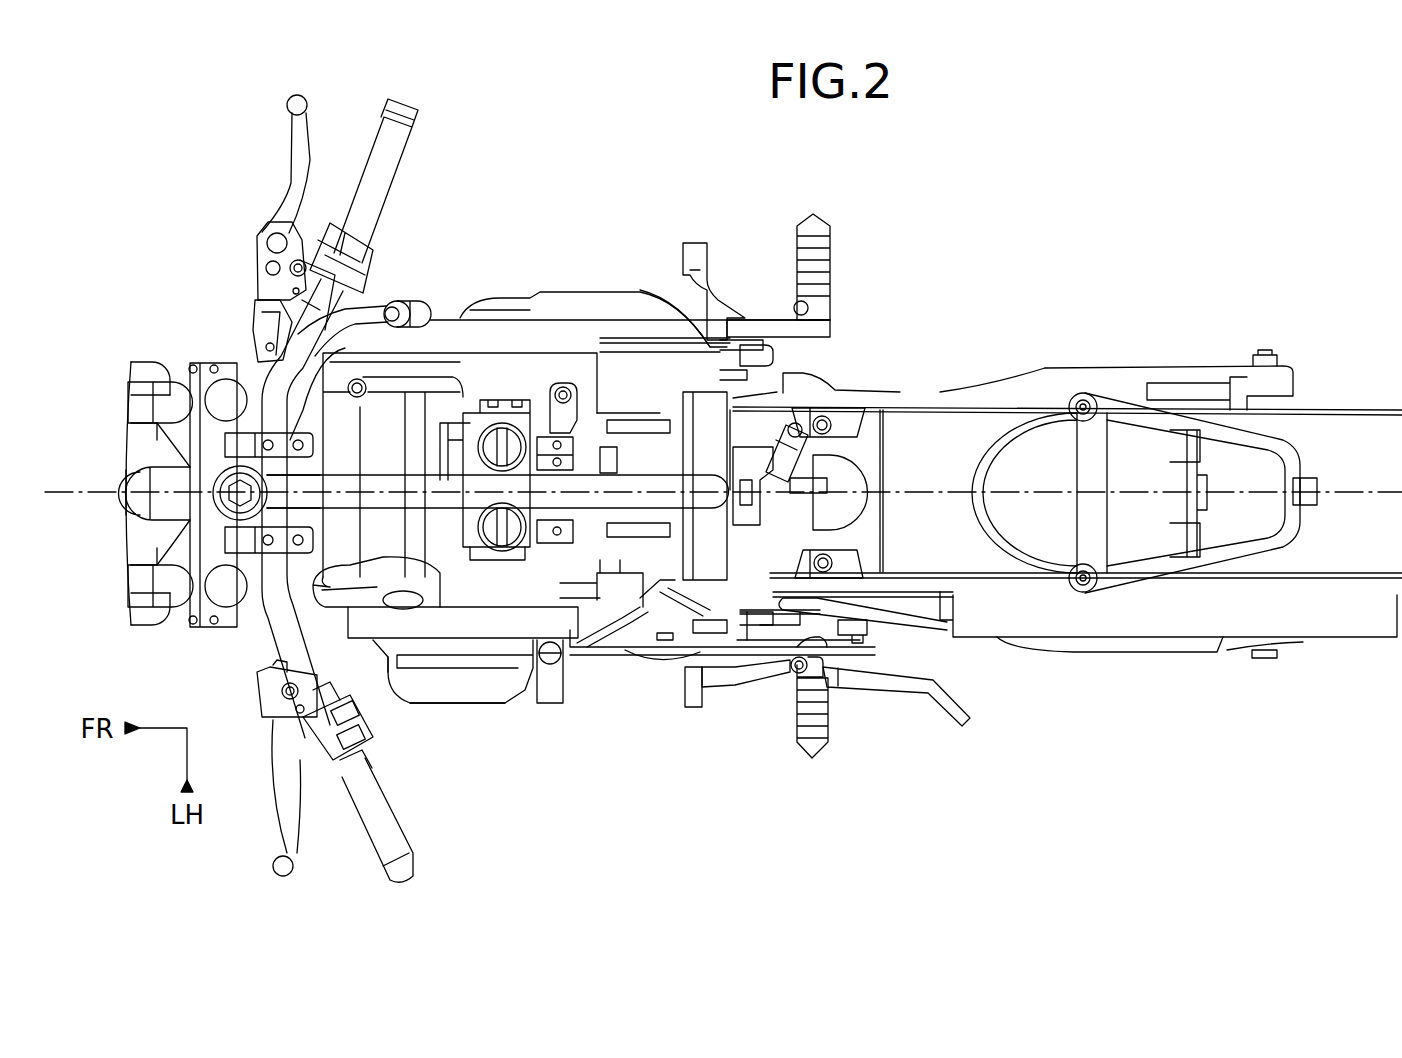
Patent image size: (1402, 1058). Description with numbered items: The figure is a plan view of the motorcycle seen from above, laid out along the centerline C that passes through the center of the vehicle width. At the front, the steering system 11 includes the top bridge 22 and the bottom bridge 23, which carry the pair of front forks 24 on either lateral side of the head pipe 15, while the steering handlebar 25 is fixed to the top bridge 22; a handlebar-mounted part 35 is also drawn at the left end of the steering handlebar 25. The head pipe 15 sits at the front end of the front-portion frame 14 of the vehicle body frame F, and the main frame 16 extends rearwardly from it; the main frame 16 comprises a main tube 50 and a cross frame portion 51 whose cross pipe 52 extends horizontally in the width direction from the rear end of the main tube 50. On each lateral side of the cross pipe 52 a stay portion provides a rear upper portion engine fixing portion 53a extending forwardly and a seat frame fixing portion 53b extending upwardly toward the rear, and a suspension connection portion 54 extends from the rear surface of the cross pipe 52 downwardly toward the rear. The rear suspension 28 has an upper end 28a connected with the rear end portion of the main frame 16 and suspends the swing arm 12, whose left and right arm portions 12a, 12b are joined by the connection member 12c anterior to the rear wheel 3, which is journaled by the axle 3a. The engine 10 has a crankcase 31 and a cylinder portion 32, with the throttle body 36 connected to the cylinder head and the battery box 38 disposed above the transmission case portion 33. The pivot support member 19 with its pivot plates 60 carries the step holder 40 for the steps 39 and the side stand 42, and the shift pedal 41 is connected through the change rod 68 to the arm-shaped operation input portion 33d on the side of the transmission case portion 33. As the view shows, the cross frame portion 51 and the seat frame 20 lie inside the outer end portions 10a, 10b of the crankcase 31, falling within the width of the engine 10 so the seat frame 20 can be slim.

The rear wheel 3 is at (1357, 408).
The axle 3a is at (1263, 659).
The engine 10 is at (480, 707).
The outer end portion 10a is at (463, 707).
The outer end portion 10b is at (562, 292).
The steering system 11 is at (122, 392).
The swing arm 12 is at (1152, 655).
The arm portion 12a is at (1100, 653).
The arm portion 12b is at (1141, 366).
The connection member 12c is at (995, 452).
The front-portion frame 14 is at (636, 470).
The head pipe 15 is at (168, 484).
The main frame 16 is at (380, 475).
The pivot support member 19 is at (667, 657).
The seat frame 20 is at (922, 400).
The top bridge 22 is at (190, 441).
The bottom bridge 23 is at (132, 452).
The front forks 24 is at (166, 380).
The steering handlebar 25 is at (270, 365).
The rear suspension 28 is at (832, 455).
The upper end 28a is at (778, 445).
The crankcase 31 is at (512, 707).
The cylinder portion 32 is at (322, 665).
The transmission case portion 33 is at (604, 405).
The operation input portion 33d is at (652, 625).
The brake lever 35 is at (350, 320).
The throttle body 36 is at (467, 400).
The battery box 38 is at (656, 402).
The steps 39 is at (810, 215).
The step holder 40 is at (773, 673).
The shift pedal 41 is at (697, 707).
The side stand 42 is at (892, 693).
The main tube 50 is at (406, 475).
The cross frame portion 51 is at (690, 445).
The cross pipe 52 is at (680, 400).
The rear upper portion engine fixing portion 53a is at (654, 395).
The seat frame fixing portion 53b is at (722, 410).
The suspension connection portion 54 is at (762, 455).
The pivot plates 60 is at (740, 445).
The change rod 68 is at (783, 668).
The centerline C is at (172, 498).
The vehicle body frame F is at (126, 511).